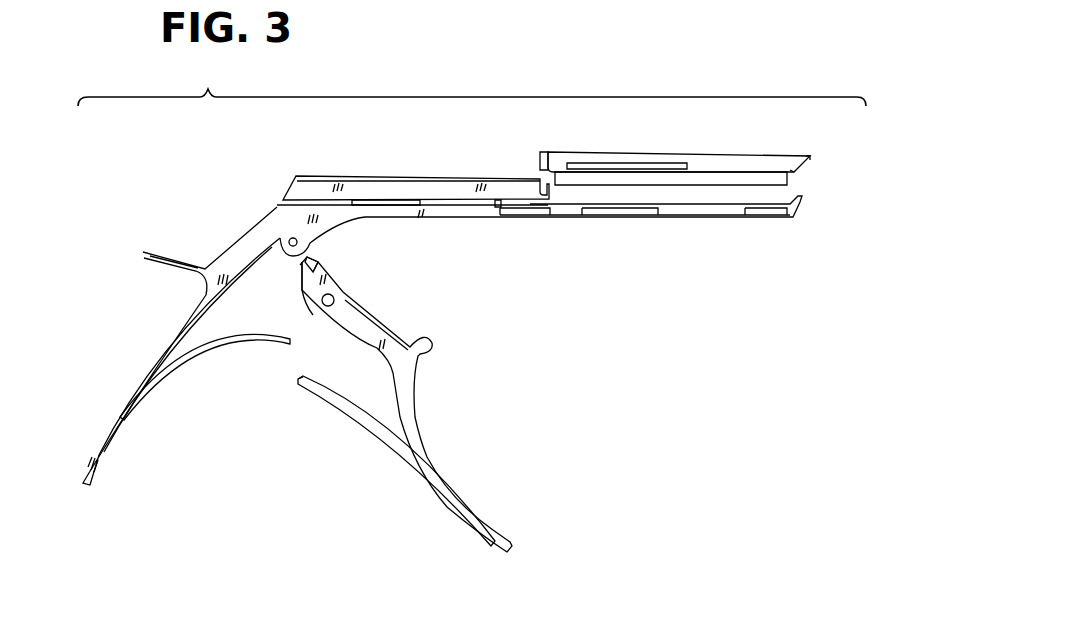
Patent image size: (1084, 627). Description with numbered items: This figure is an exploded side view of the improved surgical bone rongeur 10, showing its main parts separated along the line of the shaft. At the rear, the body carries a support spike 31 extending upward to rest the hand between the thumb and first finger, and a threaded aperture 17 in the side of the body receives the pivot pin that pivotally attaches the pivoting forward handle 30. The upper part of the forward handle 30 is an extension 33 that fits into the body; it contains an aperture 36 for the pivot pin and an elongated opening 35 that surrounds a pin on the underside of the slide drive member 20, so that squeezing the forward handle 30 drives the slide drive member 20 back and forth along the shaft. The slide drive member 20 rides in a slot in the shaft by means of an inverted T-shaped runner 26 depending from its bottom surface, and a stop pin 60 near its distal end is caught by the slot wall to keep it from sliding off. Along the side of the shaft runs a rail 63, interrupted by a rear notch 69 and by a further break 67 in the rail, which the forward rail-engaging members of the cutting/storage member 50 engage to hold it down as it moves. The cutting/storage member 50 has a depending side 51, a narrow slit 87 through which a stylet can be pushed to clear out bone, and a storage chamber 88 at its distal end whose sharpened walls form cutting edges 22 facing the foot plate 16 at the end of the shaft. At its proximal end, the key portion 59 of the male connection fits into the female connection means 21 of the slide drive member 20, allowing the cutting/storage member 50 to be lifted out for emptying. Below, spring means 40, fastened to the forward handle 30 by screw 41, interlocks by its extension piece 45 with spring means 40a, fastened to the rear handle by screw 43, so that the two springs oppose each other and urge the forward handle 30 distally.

The surgical bone rongeur 10 is at (428, 140).
The slide drive member 20 is at (368, 176).
The inverted T-shaped runner 26 is at (396, 206).
The key portion 59 is at (540, 158).
The female connection means 21 is at (533, 186).
The cutting/storage member 50 is at (698, 146).
The narrow slit 87 is at (604, 162).
The storage chamber 88 is at (715, 165).
The depending side 51 is at (761, 175).
The cutting edges 22 is at (810, 155).
The extension piece 45 is at (794, 172).
The foot plate 16 is at (805, 200).
The stop pin 60 is at (497, 207).
The rail 63 is at (531, 217).
The gap 67 is at (567, 216).
The rear notch 69 is at (730, 210).
The support spike 31 is at (144, 248).
The threaded aperture 17 is at (287, 240).
The screw 43 is at (117, 417).
The spring means 40a is at (253, 352).
The pivoting forward handle 30 is at (427, 340).
The elongated opening 35 is at (303, 259).
The extension 33 is at (303, 313).
The aperture 36 is at (337, 295).
The spring means 40 is at (357, 415).
The screw 41 is at (457, 518).